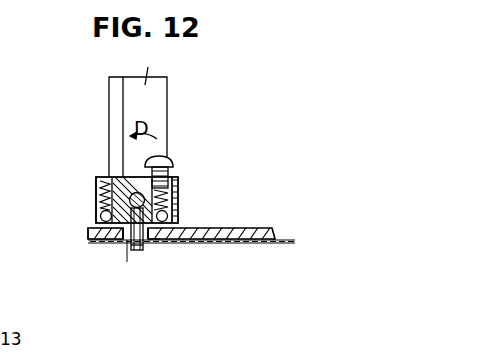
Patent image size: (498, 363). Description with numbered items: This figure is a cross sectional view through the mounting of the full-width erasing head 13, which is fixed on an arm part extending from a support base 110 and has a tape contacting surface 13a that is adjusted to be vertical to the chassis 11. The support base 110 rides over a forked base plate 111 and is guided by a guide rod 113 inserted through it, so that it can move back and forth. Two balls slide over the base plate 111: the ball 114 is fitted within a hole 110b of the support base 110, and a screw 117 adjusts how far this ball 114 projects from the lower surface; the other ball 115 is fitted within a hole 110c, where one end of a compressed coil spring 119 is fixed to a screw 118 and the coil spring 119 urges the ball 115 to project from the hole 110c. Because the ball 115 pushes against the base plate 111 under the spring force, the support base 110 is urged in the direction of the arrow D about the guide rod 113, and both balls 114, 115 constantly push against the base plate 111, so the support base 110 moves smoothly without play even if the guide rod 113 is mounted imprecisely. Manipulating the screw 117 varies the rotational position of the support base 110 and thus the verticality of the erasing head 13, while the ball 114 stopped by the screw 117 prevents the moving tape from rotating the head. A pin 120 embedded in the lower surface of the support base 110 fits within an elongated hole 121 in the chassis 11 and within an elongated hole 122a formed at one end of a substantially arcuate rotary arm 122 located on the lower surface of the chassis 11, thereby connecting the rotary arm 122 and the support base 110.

The chassis 11 is at (248, 228).
The full-width erasing head 13 is at (108, 97).
The tape contacting surface 13a is at (149, 65).
The support base 110 is at (131, 176).
The hole 110b is at (108, 176).
The hole 110c is at (174, 172).
The base plate 111 is at (86, 228).
The guide rod 113 is at (119, 246).
The ball 114 is at (100, 217).
The ball 115 is at (179, 214).
The screw 117 is at (96, 192).
The screw 118 is at (170, 160).
The compressed coil spring 119 is at (179, 197).
The pin 120 is at (137, 252).
The elongated hole 121 is at (150, 248).
The rotary arm 122 is at (245, 244).
The elongated hole 122a is at (162, 245).